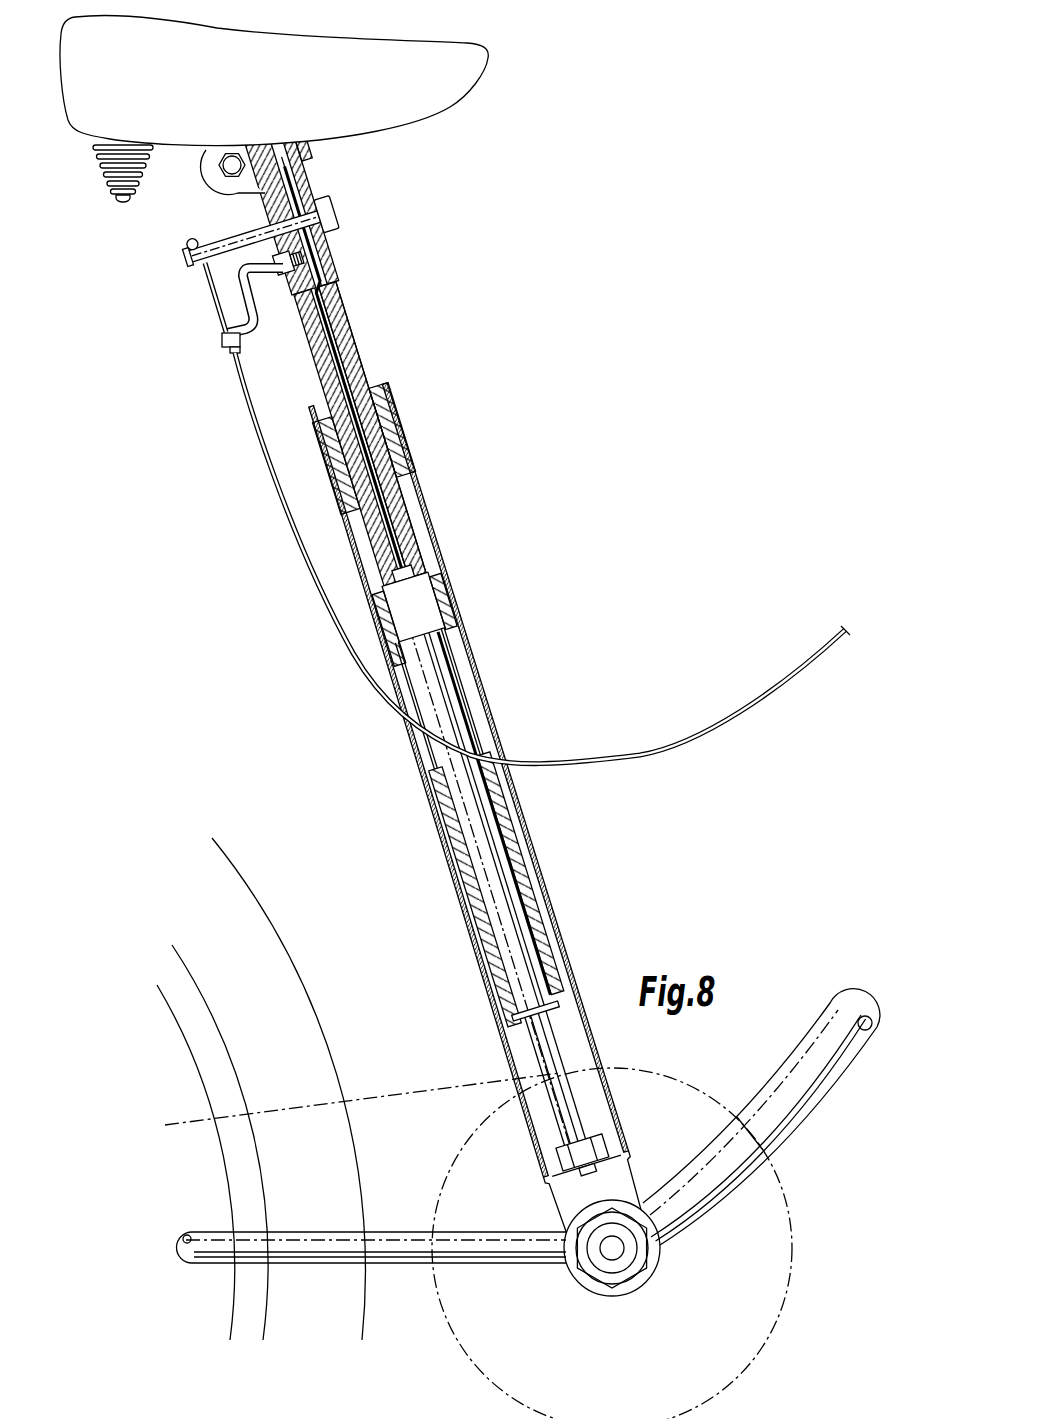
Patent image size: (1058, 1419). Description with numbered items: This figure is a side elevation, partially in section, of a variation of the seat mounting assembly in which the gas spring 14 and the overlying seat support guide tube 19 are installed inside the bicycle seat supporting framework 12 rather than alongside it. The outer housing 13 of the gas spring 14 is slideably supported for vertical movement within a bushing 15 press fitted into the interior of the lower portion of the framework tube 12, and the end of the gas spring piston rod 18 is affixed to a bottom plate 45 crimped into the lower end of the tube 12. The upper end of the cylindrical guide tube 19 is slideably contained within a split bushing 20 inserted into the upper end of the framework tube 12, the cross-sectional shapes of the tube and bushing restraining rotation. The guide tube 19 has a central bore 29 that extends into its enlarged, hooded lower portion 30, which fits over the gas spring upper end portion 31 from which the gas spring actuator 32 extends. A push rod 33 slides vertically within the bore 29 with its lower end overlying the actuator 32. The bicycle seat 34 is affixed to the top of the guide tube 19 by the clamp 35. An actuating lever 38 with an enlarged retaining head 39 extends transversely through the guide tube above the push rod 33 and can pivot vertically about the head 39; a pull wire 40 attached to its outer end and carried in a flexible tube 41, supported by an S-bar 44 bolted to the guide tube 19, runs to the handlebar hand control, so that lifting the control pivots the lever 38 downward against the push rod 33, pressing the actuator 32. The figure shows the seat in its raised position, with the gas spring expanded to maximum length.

The bicycle seat supporting framework 12 is at (427, 508).
The outer housing 13 is at (453, 670).
The gas spring 14 is at (518, 1030).
The bushing 15 is at (468, 893).
The gas spring piston rod 18 is at (555, 1123).
The guide tube 19 is at (326, 385).
The split bushing 20 is at (378, 395).
The central bore 29 is at (341, 322).
The hooded lower portion 30 is at (377, 610).
The gas spring upper end portion 31 is at (427, 608).
The gas spring actuator 32 is at (420, 575).
The push rod 33 is at (320, 284).
The bicycle seat 34 is at (231, 89).
The clamp 35 is at (213, 178).
The actuating lever 38 is at (258, 234).
The retaining head 39 is at (330, 210).
The pull wire 40 is at (218, 295).
The flexible tube 41 is at (242, 375).
The S-bar 44 is at (256, 307).
The bottom plate 45 is at (557, 1197).